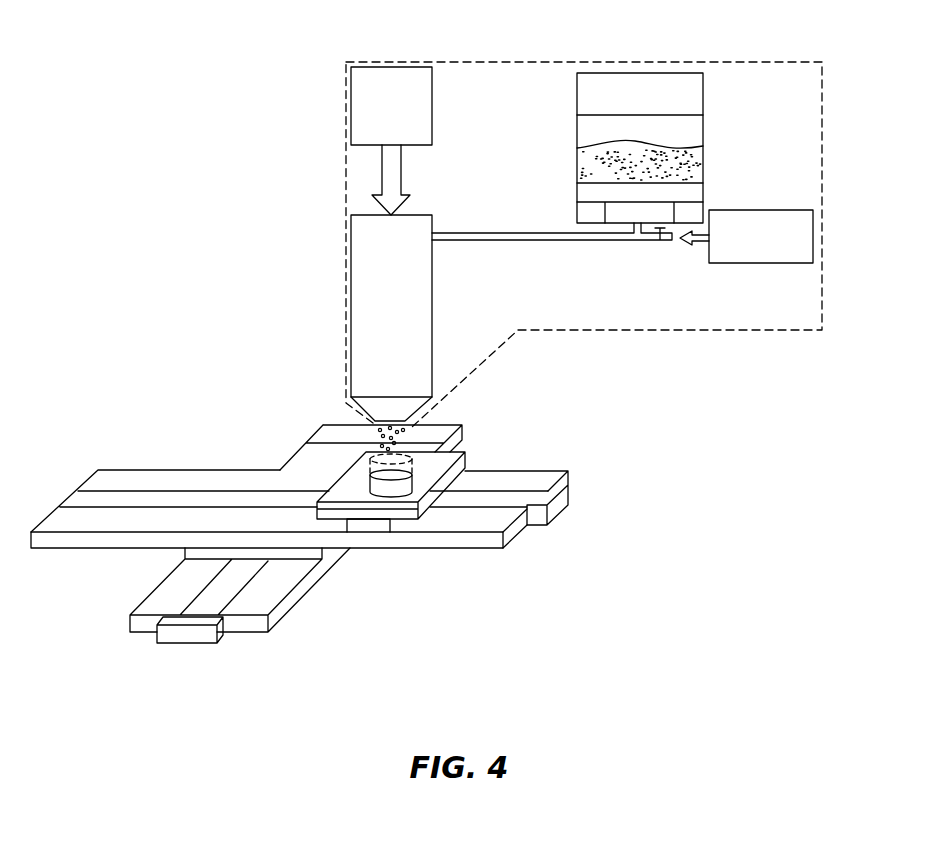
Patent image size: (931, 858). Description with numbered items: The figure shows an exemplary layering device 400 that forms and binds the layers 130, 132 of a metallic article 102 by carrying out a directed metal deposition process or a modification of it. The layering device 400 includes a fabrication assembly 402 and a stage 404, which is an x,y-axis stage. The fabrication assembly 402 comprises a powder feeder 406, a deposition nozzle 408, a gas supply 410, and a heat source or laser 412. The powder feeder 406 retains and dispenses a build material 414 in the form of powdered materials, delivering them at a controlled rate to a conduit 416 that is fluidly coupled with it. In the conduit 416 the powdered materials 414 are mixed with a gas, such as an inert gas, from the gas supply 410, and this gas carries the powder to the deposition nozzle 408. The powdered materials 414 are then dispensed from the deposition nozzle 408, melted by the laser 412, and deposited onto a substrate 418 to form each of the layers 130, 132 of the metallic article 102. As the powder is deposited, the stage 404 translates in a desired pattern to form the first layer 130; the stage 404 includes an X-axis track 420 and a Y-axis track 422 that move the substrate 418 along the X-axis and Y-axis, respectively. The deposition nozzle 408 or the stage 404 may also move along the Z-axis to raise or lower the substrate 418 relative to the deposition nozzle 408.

The layering device 400 is at (157, 81).
The fabrication assembly 402 is at (782, 62).
The stage 404 is at (368, 549).
The powder feeder 406 is at (620, 107).
The deposition nozzle 408 is at (371, 318).
The gas supply 410 is at (741, 250).
The laser 412 is at (371, 114).
The build material 414 is at (682, 168).
The conduit 416 is at (512, 233).
The substrate 418 is at (423, 505).
The X-axis track 420 is at (543, 482).
The Y-axis track 422 is at (167, 600).
The metallic article 102 is at (406, 456).
The first layer 130 is at (370, 480).
The layer 132 is at (370, 462).